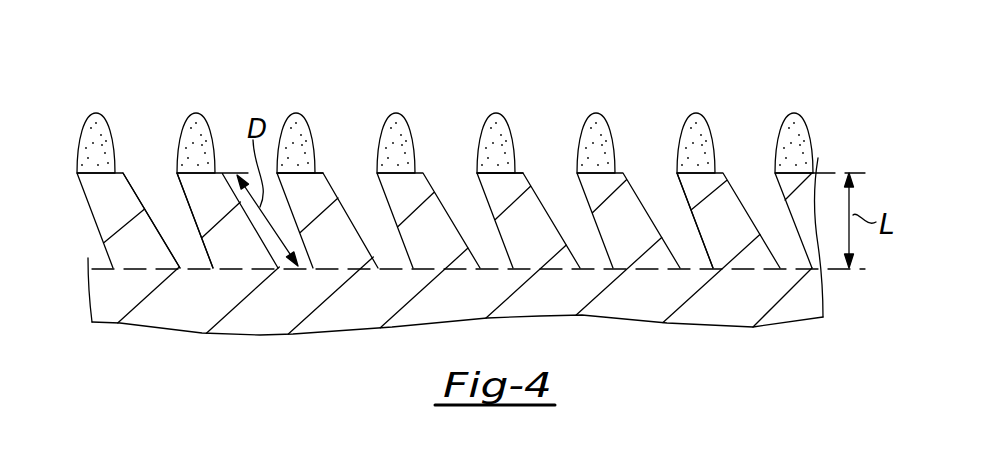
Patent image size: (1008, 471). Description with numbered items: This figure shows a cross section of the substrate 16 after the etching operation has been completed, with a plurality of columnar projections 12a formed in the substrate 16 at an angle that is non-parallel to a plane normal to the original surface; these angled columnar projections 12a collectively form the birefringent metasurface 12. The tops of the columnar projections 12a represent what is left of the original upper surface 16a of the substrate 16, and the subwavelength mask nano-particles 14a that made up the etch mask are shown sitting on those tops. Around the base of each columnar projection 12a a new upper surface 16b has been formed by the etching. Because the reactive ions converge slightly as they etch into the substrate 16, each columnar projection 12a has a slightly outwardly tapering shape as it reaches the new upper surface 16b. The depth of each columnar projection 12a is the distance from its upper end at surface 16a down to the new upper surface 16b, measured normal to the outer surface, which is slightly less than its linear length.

The birefringent metasurface 12 is at (414, 237).
The columnar projections 12a is at (663, 195).
The mask nano-particles 14a is at (395, 113).
The substrate 16 is at (728, 274).
The surface of substrate 16a is at (318, 172).
The new upper surface 16b is at (197, 268).